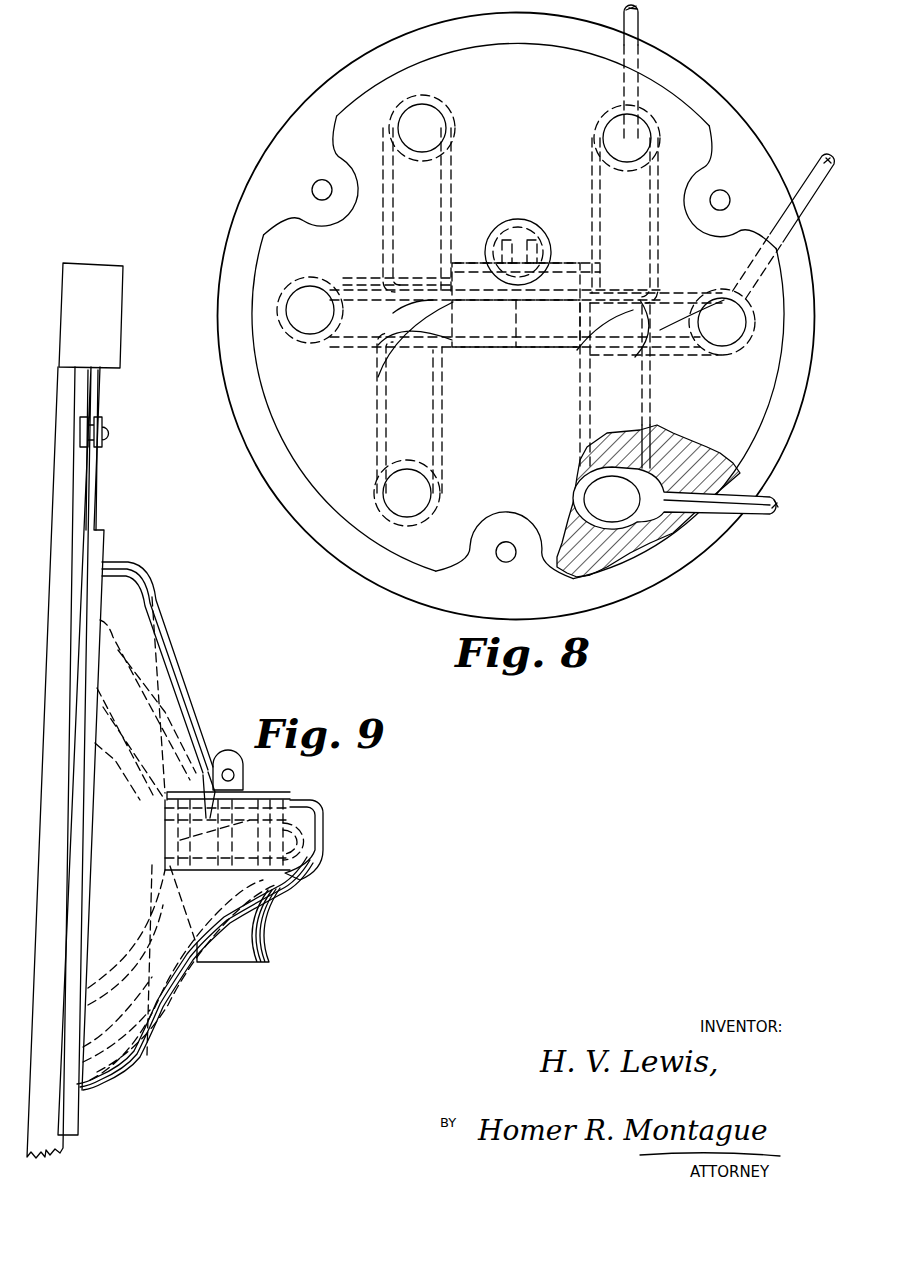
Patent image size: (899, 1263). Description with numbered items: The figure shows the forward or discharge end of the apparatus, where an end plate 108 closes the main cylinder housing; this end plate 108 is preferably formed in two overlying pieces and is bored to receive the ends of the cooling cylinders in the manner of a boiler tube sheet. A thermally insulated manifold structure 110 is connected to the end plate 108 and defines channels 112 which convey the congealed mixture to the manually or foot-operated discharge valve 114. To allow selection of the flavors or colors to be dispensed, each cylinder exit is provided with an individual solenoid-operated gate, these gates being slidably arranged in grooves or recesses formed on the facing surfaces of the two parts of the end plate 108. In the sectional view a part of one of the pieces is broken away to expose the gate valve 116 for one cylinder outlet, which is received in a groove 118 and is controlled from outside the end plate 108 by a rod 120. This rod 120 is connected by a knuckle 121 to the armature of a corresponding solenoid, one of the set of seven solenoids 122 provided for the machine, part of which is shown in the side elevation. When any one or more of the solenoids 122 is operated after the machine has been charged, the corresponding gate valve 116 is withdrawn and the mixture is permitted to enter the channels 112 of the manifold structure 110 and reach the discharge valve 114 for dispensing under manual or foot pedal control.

In FIG. 8, the end plate 108 is at (232, 272).
In FIG. 9, the end plate 108 is at (82, 533).
In FIG. 9, the thermally insulated manifold structure 110 is at (172, 640).
In FIG. 8, the channels 112 is at (460, 168).
In FIG. 9, the channels 112 is at (170, 740).
In FIG. 9, the discharge valve 114 is at (313, 833).
In FIG. 8, the gate valve 116 is at (628, 511).
In FIG. 8, the groove 118 is at (652, 527).
In FIG. 8, the rod 120 is at (640, 26).
In FIG. 9, the rod 120 is at (92, 460).
In FIG. 9, the knuckle 121 is at (103, 425).
In FIG. 9, the solenoids 122 is at (107, 325).